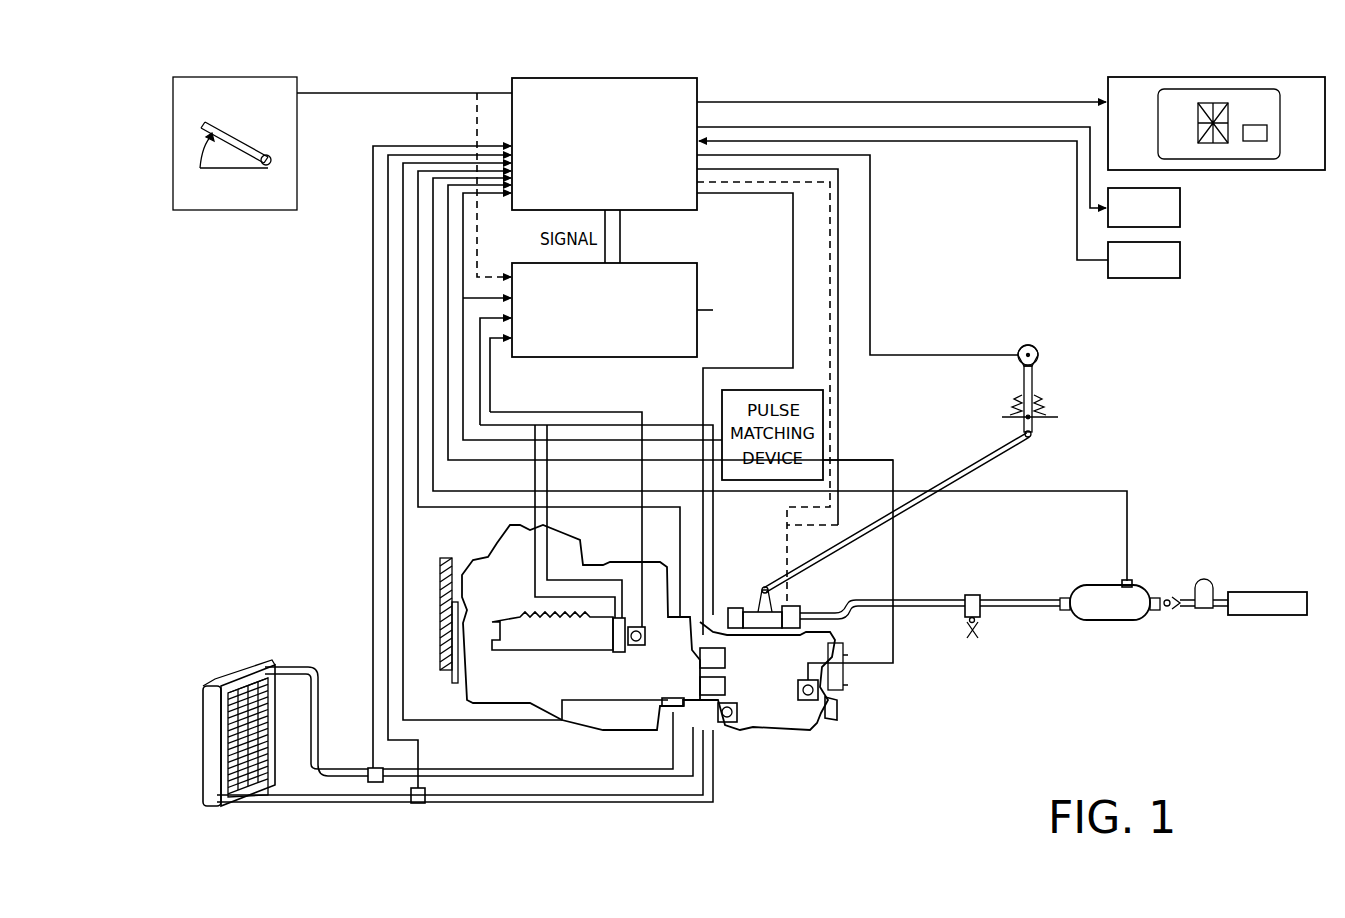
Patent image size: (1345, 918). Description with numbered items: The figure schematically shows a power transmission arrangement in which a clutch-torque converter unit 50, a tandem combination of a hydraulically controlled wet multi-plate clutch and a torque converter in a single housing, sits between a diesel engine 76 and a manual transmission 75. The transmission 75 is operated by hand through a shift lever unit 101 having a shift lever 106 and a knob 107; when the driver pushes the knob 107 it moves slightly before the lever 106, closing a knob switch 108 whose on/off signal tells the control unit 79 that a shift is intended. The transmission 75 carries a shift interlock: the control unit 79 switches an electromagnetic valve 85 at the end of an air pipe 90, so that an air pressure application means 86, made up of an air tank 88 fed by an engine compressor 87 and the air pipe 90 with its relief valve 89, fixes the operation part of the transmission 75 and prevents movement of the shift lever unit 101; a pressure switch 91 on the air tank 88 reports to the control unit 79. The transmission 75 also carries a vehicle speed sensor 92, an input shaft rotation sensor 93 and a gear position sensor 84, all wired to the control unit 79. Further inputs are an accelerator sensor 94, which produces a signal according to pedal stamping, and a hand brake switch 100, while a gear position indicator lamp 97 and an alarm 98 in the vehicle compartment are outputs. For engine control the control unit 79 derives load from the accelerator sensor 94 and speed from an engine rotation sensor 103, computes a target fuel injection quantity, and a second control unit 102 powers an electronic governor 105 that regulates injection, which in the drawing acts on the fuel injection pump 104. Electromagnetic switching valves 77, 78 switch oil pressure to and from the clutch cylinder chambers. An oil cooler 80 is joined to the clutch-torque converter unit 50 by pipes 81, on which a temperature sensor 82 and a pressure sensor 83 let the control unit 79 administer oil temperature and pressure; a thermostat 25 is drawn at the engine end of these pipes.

The thermostat 25 is at (668, 712).
The clutch-torque converter unit 50 is at (690, 748).
The transmission 75 is at (788, 720).
The engine 76 is at (612, 718).
The electromagnetic switching valve 77 is at (725, 660).
The electromagnetic switching valve 78 is at (725, 688).
The control unit 79 is at (604, 78).
The oil cooler 80 is at (195, 717).
The pipes 81 is at (327, 800).
The temperature sensor 82 is at (368, 770).
The pressure sensor 83 is at (418, 803).
The gear position sensor 84 is at (733, 606).
The electromagnetic valve 85 is at (800, 608).
The air pressure application means 86 is at (1217, 555).
The engine compressor 87 is at (1262, 612).
The air tank 88 is at (1100, 618).
The relief valve 89 is at (967, 630).
The air pipe 90 is at (1010, 600).
The pressure switch 91 is at (1122, 582).
The vehicle speed sensor 92 is at (838, 705).
The input shaft rotation sensor 93 is at (727, 724).
The accelerator sensor 94 is at (232, 77).
The gear position indicator lamp 97 is at (1212, 77).
The alarm 98 is at (1182, 208).
The hand brake switch 100 is at (1182, 260).
The shift lever unit 101 is at (963, 443).
The second control unit 102 is at (660, 263).
The engine rotation sensor 103 is at (640, 648).
The fuel injection pump 104 is at (535, 632).
The electronic governor 105 is at (612, 652).
The shift lever 106 is at (1018, 385).
The knob 107 is at (1040, 352).
The knob switch 108 is at (1022, 348).